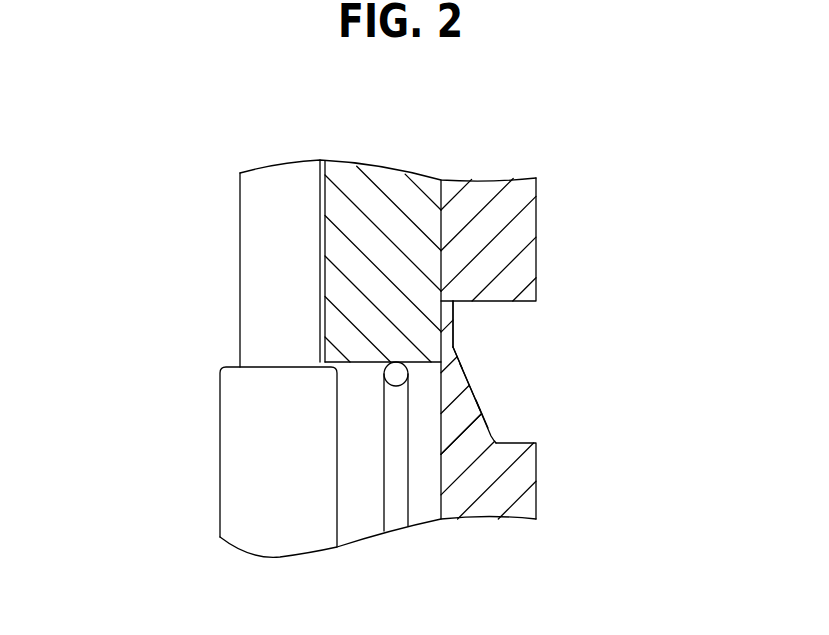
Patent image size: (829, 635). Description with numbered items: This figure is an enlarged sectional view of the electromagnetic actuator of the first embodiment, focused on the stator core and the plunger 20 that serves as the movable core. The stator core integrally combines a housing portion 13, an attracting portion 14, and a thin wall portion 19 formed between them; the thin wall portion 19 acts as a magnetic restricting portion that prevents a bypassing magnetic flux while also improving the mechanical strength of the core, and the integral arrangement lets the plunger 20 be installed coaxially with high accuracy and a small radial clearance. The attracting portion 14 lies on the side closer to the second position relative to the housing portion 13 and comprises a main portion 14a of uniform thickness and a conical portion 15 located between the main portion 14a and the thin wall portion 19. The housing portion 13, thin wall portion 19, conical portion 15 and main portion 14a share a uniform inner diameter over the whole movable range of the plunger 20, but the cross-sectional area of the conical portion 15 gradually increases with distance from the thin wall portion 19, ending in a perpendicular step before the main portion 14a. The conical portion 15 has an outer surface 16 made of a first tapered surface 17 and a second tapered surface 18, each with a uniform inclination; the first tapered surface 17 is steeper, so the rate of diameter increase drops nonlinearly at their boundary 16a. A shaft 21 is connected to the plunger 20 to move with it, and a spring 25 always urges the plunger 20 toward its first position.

The housing portion 13 is at (515, 202).
The attracting portion 14 is at (588, 483).
The main portion 14a is at (507, 492).
The conical portion 15 is at (467, 422).
The outer surface 16 is at (477, 392).
The boundary 16a is at (471, 381).
The first tapered surface 17 is at (457, 362).
The second tapered surface 18 is at (481, 408).
The thin wall portion 19 is at (443, 325).
The plunger 20 is at (386, 192).
The shaft 21 is at (238, 462).
The spring 25 is at (395, 520).